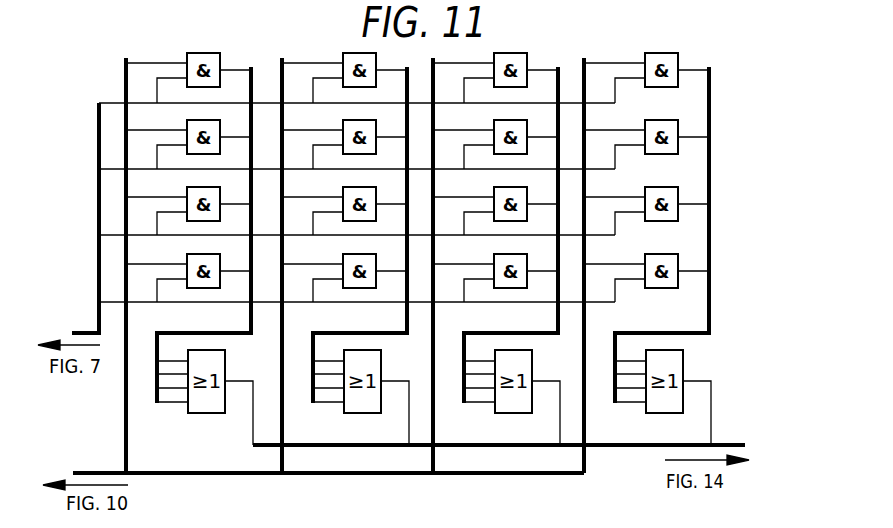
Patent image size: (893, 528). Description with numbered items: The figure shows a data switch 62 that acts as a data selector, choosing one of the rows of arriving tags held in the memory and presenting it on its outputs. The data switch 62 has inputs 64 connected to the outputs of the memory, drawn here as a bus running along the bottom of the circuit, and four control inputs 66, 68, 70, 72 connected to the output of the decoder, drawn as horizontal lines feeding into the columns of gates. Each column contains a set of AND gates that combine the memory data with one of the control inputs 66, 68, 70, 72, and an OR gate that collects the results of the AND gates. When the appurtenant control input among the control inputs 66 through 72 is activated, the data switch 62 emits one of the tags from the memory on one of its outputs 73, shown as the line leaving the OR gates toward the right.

The data switch 62 is at (723, 73).
The inputs 64 is at (205, 475).
The control input 66 is at (112, 103).
The control input 68 is at (112, 169).
The control input 70 is at (112, 235).
The control input 72 is at (112, 302).
The outputs 73 is at (617, 448).